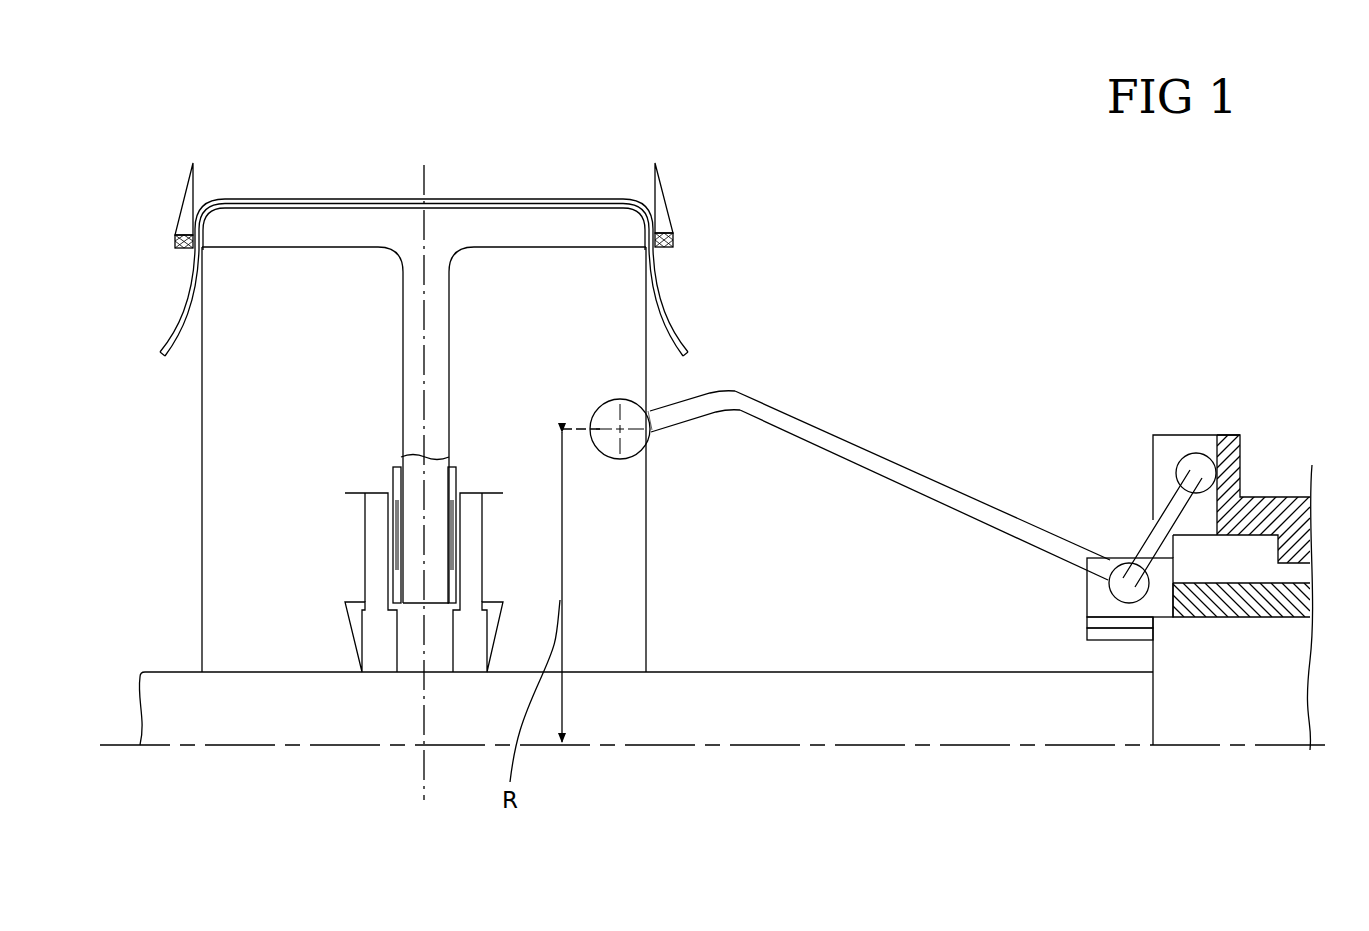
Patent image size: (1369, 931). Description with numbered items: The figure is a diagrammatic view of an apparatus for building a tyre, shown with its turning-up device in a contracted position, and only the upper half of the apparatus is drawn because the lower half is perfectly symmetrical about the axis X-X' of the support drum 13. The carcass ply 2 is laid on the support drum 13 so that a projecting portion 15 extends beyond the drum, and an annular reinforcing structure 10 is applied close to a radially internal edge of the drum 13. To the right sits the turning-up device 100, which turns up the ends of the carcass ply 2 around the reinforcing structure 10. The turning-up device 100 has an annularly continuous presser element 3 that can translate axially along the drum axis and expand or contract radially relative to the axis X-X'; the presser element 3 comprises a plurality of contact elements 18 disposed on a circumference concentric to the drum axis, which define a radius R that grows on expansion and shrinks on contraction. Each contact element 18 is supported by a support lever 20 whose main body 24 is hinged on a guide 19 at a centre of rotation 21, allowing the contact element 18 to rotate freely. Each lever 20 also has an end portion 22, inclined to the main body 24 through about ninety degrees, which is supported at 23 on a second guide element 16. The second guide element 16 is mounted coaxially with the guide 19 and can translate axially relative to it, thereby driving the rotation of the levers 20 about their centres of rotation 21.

The carcass ply 2 is at (599, 188).
The support drum 13 is at (534, 224).
The annular reinforcing structure 10 is at (674, 240).
The projecting portion 15 is at (673, 327).
The turning-up device 100 is at (648, 404).
The annularly continuous presser element 3 is at (597, 398).
The contact element 18 is at (642, 464).
The main body 24 is at (765, 410).
The support lever 20 is at (888, 457).
The centre of rotation 21 is at (1123, 593).
The end portion 22 is at (1152, 545).
The support point 23 is at (1196, 467).
The second guide element 16 is at (1270, 512).
The guide 19 is at (1210, 605).
The axis X-X' X is at (111, 748).